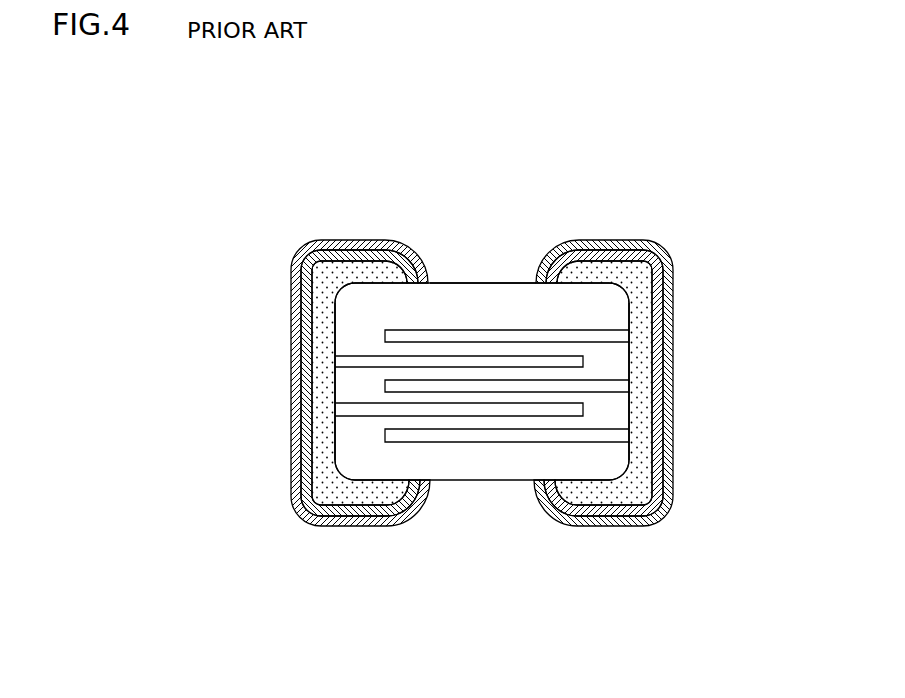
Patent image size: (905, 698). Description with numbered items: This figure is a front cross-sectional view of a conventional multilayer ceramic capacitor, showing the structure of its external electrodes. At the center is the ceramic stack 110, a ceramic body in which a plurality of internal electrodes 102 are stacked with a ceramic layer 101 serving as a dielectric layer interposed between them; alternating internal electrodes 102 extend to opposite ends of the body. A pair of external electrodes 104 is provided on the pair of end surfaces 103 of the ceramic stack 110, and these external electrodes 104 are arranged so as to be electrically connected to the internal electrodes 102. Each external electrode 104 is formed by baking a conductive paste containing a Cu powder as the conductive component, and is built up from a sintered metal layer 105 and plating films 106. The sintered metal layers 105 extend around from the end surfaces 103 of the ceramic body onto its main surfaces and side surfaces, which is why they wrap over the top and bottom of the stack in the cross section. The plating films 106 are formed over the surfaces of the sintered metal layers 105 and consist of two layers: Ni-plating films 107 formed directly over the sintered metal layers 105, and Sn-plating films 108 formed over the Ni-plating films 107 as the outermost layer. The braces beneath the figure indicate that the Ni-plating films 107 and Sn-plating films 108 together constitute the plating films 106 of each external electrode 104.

The ceramic layer 101 is at (417, 375).
The internal electrodes 102 is at (375, 404).
The end surfaces 103 is at (333, 340).
The external electrodes 104 is at (489, 400).
The sintered metal layers 105 is at (291, 308).
The plating films 106 is at (470, 458).
The Ni-plating films 107 is at (357, 522).
The Sn-plating films 108 is at (310, 521).
The ceramic stack 110 is at (494, 280).